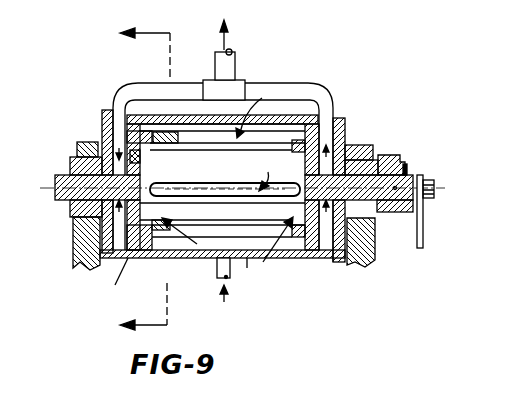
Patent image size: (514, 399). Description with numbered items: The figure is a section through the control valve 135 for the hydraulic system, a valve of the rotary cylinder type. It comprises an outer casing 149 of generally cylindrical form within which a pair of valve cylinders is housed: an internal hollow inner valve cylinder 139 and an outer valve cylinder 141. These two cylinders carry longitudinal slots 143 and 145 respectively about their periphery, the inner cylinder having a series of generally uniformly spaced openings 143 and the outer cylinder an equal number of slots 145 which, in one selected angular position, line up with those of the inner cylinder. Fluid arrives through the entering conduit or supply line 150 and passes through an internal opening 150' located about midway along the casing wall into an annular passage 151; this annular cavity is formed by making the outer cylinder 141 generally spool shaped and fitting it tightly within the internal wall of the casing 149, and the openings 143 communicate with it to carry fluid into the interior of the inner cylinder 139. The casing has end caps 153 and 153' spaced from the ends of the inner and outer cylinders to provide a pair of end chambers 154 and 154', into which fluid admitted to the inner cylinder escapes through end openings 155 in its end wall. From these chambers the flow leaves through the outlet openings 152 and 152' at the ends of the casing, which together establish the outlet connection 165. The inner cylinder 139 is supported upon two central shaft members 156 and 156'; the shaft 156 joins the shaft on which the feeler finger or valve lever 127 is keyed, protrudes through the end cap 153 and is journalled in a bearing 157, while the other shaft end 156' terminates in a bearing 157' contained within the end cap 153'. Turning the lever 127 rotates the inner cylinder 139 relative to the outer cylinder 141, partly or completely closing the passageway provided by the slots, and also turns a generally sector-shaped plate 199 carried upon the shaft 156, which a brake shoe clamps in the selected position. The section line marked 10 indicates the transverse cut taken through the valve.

The section line 10- 10 is at (150, 178).
The feeler finger or valve lever 127 is at (421, 234).
The valve 135 is at (315, 76).
The inner valve cylinder 139 is at (108, 281).
The outer valve cylinder 141 is at (318, 248).
The longitudinal slots 143 is at (207, 150).
The longitudinal slots 145 is at (262, 98).
The outer casing 149 is at (303, 260).
The supply line 150 is at (203, 283).
The internal opening 150' is at (268, 281).
The annular passage 151 is at (167, 258).
The outlet opening 152 is at (247, 172).
The outlet opening 152' is at (97, 175).
The end cap 153 is at (368, 183).
The end cap 153' is at (88, 181).
The end chamber 154 is at (362, 147).
The end chamber 154' is at (78, 243).
The end openings 155 is at (142, 210).
The central shaft member 156 is at (417, 179).
The central shaft member 156' is at (67, 211).
The bearing 157 is at (379, 242).
The bearing 157' is at (69, 158).
The outlet connection 165 is at (214, 62).
The sector-shaped plate 199 is at (406, 172).